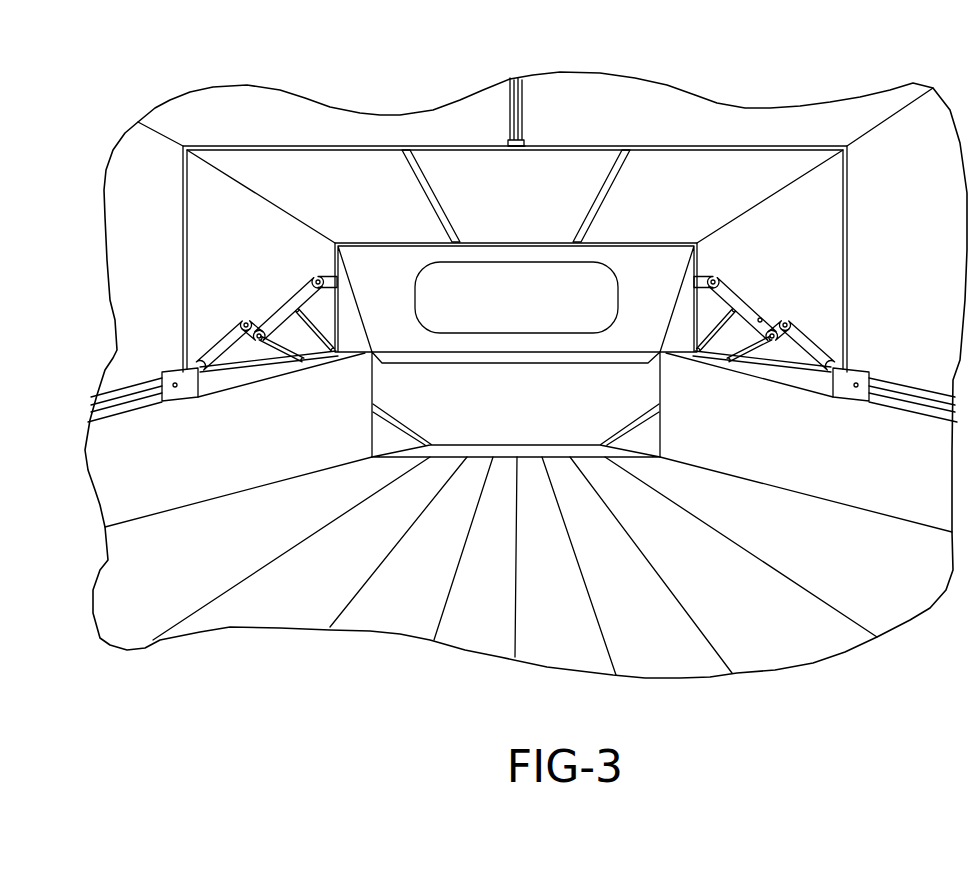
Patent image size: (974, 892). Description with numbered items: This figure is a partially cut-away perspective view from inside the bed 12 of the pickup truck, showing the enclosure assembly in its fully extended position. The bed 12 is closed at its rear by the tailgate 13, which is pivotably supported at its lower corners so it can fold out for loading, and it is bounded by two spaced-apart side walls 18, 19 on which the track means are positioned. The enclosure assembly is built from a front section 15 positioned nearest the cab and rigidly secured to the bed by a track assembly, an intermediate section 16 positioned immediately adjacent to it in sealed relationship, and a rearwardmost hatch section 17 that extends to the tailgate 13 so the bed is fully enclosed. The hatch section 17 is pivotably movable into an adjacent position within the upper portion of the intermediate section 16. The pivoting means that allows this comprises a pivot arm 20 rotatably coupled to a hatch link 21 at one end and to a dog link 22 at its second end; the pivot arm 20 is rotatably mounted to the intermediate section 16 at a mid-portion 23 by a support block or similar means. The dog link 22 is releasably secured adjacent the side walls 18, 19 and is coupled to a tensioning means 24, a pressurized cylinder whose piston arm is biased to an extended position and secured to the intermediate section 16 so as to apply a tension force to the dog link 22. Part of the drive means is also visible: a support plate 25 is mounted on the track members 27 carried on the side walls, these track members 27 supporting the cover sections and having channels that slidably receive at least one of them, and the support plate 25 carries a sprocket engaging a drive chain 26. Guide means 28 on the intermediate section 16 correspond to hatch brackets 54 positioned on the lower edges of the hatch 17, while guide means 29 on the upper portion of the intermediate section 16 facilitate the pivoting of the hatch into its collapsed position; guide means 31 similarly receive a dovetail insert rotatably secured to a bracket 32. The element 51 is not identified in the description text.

The bed 12 is at (538, 594).
The tailgate 13 is at (520, 443).
The front section 15 is at (134, 238).
The intermediate section 16 is at (208, 237).
The hatch section 17 is at (531, 313).
The side wall 18 is at (800, 462).
The side wall 19 is at (174, 473).
The pivot arm 20 is at (297, 290).
The hatch link 21 is at (327, 273).
The dog link 22 is at (283, 357).
The mid-portion 23 is at (270, 322).
The tensioning means 24 is at (208, 360).
The support plate 25 is at (170, 370).
The drive chain 26 is at (105, 410).
The track members 27 is at (263, 380).
The guide means 28 is at (718, 340).
The guide means 29 is at (613, 170).
The guide means 31 is at (517, 103).
The bracket 32 is at (522, 145).
The ledge 51 is at (507, 363).
The hatch brackets 54 is at (713, 337).